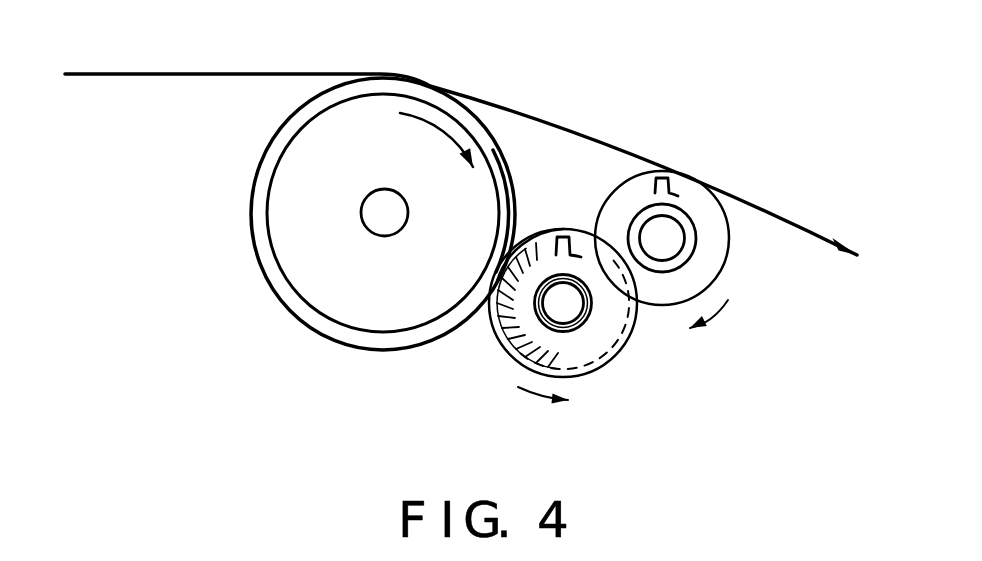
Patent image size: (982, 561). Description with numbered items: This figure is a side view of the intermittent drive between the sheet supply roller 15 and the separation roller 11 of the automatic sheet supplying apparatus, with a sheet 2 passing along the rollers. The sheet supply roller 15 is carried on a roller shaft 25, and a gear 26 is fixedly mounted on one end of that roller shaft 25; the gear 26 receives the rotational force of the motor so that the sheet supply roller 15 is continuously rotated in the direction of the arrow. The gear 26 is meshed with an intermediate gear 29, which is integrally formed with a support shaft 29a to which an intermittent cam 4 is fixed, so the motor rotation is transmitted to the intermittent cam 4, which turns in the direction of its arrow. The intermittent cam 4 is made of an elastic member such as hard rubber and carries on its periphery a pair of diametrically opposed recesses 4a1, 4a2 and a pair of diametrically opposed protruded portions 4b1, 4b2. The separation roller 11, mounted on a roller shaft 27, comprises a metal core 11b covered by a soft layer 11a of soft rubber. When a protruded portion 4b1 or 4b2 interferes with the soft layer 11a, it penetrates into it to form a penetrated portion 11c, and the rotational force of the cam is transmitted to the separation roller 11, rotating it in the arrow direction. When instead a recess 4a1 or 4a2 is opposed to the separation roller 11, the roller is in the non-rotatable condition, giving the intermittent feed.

The sheet 2 is at (232, 74).
The separation roller 11 is at (250, 212).
The soft layer 11a is at (277, 156).
The metal core 11b is at (358, 120).
The penetrated portion 11c is at (525, 230).
The roller shaft 27 is at (378, 213).
The intermittent cam 4 is at (580, 386).
The recess 4a1 is at (520, 356).
The recess 4a2 is at (580, 237).
The protruded portion 4b1 is at (612, 365).
The protruded portion 4b2 is at (537, 237).
The intermediate gear 29 is at (623, 352).
The support shaft 29a is at (507, 348).
The sheet supply roller 15 is at (733, 263).
The roller shaft 25 is at (712, 197).
The gear 26 is at (662, 238).